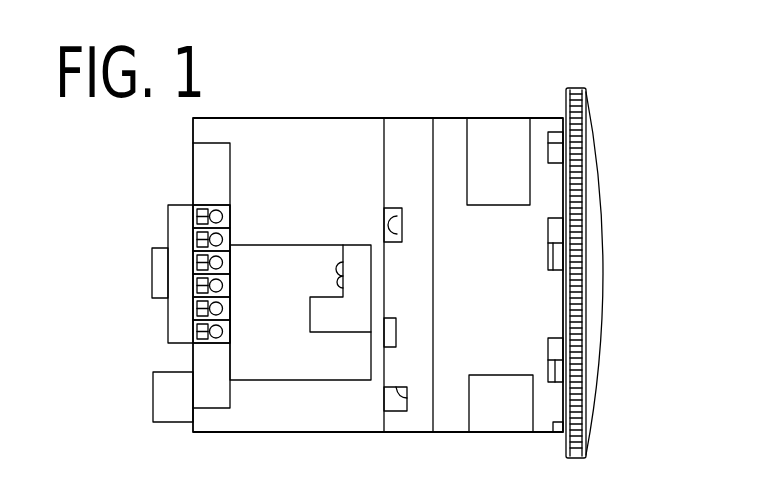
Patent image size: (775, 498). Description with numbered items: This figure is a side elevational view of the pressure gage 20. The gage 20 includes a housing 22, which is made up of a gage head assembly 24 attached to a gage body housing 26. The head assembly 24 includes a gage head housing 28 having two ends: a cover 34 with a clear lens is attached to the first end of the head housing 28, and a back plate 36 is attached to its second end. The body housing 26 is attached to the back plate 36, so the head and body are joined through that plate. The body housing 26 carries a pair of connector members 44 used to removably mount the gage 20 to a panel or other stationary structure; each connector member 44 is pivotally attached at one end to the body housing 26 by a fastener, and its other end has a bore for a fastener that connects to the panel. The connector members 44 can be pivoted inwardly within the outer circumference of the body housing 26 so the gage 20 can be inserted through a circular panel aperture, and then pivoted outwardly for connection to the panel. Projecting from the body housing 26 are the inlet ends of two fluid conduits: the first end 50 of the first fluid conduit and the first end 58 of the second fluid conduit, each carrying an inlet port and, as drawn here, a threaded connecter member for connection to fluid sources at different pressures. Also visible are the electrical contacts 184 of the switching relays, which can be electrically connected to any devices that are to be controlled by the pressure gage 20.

The pressure gage 20 is at (672, 72).
The housing 22 is at (456, 118).
The gage head assembly 24 is at (497, 122).
The gage body housing 26 is at (287, 112).
The gage head housing 28 is at (507, 418).
The cover 34 is at (578, 91).
The back plate 36 is at (413, 432).
The connector members 44 is at (335, 325).
The first end of first fluid conduit 50 is at (150, 264).
The first end of second fluid conduit 58 is at (152, 390).
The electrical contacts 184 is at (202, 309).